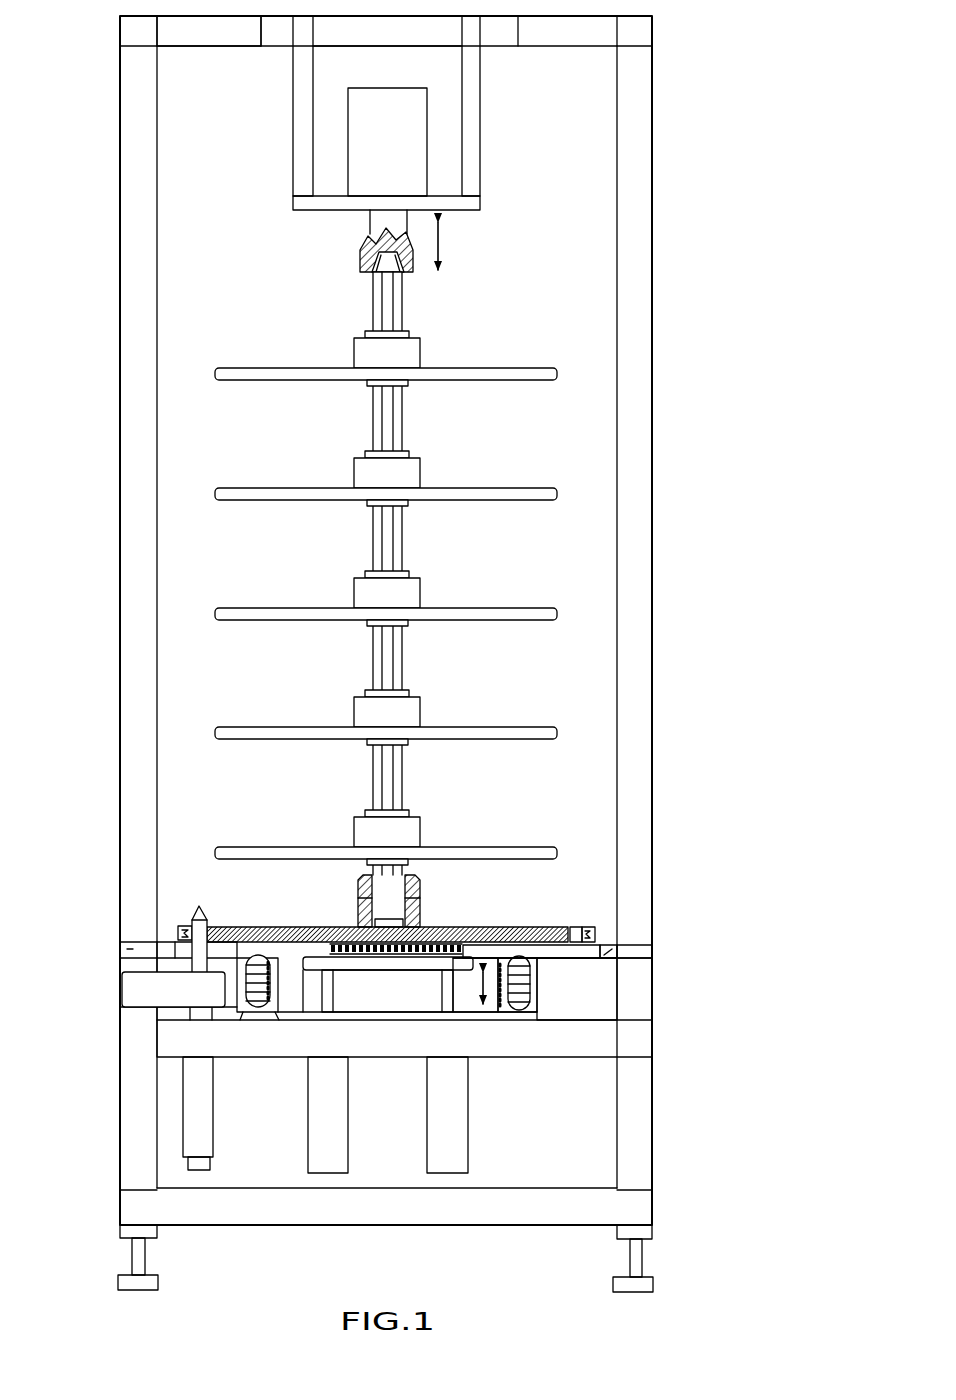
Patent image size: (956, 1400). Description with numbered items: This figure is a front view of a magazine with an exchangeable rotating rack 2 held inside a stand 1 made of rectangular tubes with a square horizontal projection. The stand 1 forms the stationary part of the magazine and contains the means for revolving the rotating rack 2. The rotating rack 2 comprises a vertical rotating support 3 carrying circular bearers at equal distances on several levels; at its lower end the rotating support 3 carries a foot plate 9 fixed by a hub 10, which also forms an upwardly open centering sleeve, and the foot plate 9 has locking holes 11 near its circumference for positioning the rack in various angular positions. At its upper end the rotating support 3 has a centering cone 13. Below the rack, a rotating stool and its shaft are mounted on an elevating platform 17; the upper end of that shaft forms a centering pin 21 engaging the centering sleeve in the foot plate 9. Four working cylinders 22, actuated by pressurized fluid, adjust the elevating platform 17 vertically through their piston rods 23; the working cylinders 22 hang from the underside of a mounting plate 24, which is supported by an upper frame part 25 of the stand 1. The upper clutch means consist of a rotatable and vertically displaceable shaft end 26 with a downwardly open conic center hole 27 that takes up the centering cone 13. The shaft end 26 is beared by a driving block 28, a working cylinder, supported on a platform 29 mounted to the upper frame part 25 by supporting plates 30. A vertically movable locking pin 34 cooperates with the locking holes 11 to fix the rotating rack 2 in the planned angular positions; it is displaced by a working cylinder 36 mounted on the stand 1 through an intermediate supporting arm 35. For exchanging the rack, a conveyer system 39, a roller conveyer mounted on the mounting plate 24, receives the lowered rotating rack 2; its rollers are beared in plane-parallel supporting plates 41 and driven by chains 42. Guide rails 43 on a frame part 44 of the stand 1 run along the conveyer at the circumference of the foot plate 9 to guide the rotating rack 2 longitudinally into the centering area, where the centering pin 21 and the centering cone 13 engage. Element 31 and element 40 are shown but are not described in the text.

The stand 1 is at (118, 320).
The rotating rack 2 is at (456, 446).
The rotating support 3 is at (390, 537).
The foot plate 9 is at (532, 927).
The hub 10 is at (421, 889).
The locking holes 11 is at (575, 927).
The centering cone 13 is at (371, 278).
The elevating platform 17 is at (318, 957).
The centering pin 21 is at (421, 921).
The working cylinders 22 is at (446, 1135).
The piston rods 23 is at (442, 988).
The mounting plate 24 is at (580, 1052).
The upper frame part 25 is at (607, 1064).
The shaft end 26 is at (362, 252).
The conic center hole 27 is at (360, 266).
The driving block 28 is at (420, 133).
The platform 29 is at (470, 205).
The supporting plates 30 is at (302, 79).
The top cross member 31 is at (265, 44).
The locking pin 34 is at (197, 910).
The supporting arm 35 is at (148, 985).
The working cylinder 36 is at (200, 1103).
The conveyer system 39 is at (556, 988).
The coil housing 40 is at (252, 1014).
The supporting plates 41 is at (242, 1020).
The chains 42 is at (266, 955).
The guide rails 43 is at (628, 944).
The frame part 44 is at (118, 945).